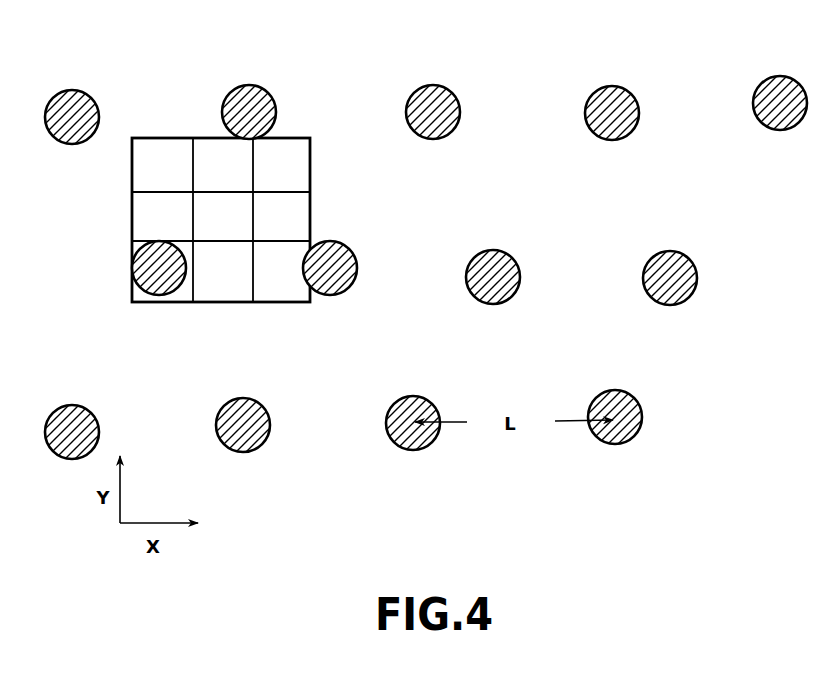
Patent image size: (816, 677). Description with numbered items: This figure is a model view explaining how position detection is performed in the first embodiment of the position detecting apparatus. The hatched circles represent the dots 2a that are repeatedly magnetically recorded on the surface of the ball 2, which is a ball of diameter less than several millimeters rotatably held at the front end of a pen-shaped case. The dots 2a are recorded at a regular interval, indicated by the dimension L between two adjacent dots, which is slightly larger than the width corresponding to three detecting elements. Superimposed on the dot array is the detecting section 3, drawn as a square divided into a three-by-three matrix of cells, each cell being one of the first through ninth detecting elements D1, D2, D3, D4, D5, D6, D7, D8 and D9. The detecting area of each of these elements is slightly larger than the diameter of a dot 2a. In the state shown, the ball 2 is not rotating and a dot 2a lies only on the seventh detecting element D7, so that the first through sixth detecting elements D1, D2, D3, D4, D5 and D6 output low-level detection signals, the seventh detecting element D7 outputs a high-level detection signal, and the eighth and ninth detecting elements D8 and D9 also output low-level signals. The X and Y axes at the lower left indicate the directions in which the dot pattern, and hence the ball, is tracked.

The ball 2 is at (273, 82).
The dot 2a is at (92, 97).
The detecting section 3 is at (249, 220).
The first detecting element D1 is at (162, 166).
The second detecting element D2 is at (223, 166).
The third detecting element D3 is at (282, 166).
The fourth detecting element D4 is at (162, 217).
The fifth detecting element D5 is at (223, 217).
The sixth detecting element D6 is at (282, 217).
The seventh detecting element D7 is at (137, 287).
The eighth detecting element D8 is at (223, 272).
The ninth detecting element D9 is at (282, 272).